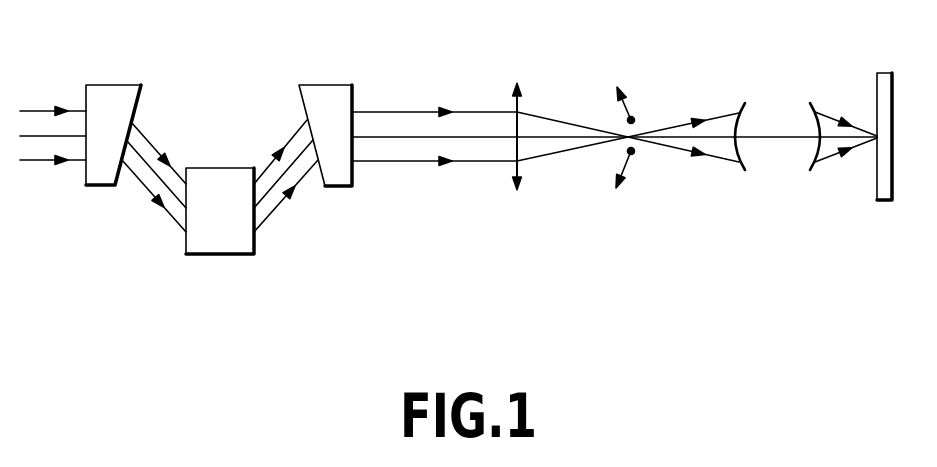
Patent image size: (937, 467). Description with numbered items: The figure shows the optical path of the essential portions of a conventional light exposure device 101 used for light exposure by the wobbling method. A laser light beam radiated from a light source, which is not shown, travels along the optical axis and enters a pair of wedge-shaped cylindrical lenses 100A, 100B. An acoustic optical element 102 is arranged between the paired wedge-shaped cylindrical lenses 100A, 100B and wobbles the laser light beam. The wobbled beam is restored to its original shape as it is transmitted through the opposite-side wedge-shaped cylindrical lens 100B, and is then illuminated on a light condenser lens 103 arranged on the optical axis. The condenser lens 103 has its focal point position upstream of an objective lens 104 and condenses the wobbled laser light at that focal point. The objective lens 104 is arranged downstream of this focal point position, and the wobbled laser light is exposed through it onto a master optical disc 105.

The wedge-shaped cylindrical lens 100A is at (117, 85).
The wedge-shaped cylindrical lens 100B is at (340, 85).
The light exposure device 101 is at (288, 250).
The acoustic optical element 102 is at (210, 254).
The light condenser lens 103 is at (520, 112).
The objective lens 104 is at (785, 113).
The master optical disc 105 is at (880, 200).